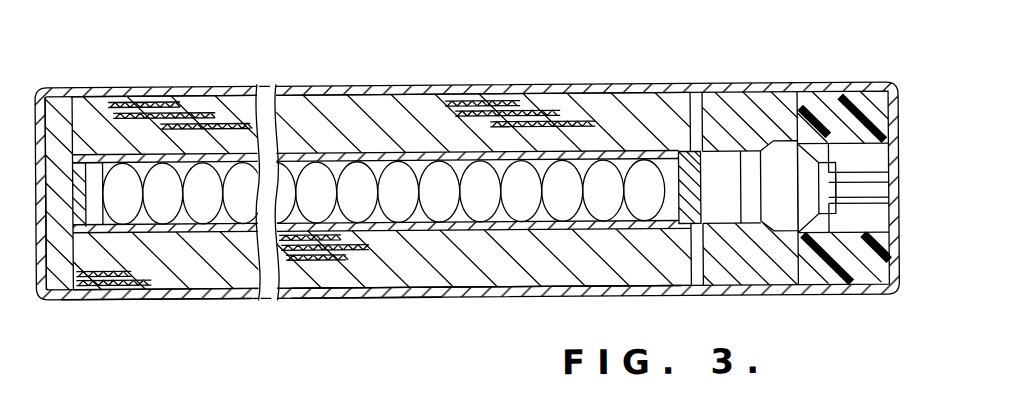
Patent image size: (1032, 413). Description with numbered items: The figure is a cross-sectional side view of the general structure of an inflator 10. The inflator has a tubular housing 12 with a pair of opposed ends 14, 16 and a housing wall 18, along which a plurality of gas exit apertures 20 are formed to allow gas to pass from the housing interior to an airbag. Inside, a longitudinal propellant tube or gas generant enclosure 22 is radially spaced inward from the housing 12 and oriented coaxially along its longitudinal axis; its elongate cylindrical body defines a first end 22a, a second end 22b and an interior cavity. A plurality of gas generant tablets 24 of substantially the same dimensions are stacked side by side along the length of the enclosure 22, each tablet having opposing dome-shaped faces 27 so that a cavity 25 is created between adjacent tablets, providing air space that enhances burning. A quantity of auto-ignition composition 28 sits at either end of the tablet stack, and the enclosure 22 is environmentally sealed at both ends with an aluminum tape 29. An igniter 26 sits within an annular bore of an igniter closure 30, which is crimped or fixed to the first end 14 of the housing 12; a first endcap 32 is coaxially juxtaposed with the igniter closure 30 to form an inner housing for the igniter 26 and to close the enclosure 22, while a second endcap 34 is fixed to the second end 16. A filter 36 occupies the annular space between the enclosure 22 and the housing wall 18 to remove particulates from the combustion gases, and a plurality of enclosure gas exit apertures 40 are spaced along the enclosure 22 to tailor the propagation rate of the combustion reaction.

The inflator 10 is at (567, 53).
The tubular housing 12 is at (218, 306).
The first end of housing 14 is at (870, 79).
The second end of housing 16 is at (77, 81).
The housing wall 18 is at (316, 301).
The gas exit apertures 20 is at (446, 298).
The gas generant enclosure 22 is at (536, 229).
The enclosure first end 22a is at (672, 232).
The enclosure second end 22b is at (158, 236).
The gas generant tablets 24 is at (436, 178).
The cavity between adjacent tablets 25 is at (322, 157).
The igniter 26 is at (788, 168).
The dome-shaped faces 27 is at (496, 218).
The auto-ignition composition 28 is at (86, 232).
The aluminum tape 29 is at (98, 156).
The igniter closure 30 is at (865, 272).
The first endcap 32 is at (759, 272).
The second endcap 34 is at (56, 292).
The filter 36 is at (608, 264).
The enclosure gas exit apertures 40 is at (233, 158).